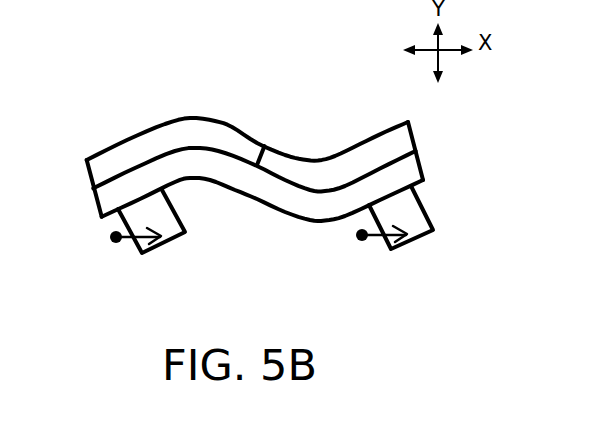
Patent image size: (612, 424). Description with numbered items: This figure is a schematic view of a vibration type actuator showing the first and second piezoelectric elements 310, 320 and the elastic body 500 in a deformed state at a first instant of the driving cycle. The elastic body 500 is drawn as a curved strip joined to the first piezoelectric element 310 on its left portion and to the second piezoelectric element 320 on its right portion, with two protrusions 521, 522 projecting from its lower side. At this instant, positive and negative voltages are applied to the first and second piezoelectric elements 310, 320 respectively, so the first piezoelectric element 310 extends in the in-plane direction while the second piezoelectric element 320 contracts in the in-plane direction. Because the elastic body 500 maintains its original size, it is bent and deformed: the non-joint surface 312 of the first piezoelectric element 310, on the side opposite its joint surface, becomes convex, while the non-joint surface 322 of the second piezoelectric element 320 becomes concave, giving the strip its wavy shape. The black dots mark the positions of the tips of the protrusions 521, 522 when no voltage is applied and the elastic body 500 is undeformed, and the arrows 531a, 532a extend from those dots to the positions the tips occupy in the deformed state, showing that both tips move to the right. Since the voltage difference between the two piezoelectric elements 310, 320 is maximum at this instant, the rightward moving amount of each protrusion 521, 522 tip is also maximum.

The elastic body 500 is at (264, 155).
The first piezoelectric element 310 is at (88, 168).
The non-joint surface 312 is at (216, 119).
The second piezoelectric element 320 is at (412, 126).
The non-joint surface 322 is at (403, 126).
The protrusion 521 is at (171, 251).
The protrusion 522 is at (416, 249).
The arrow 531a is at (118, 243).
The arrow 532a is at (363, 241).